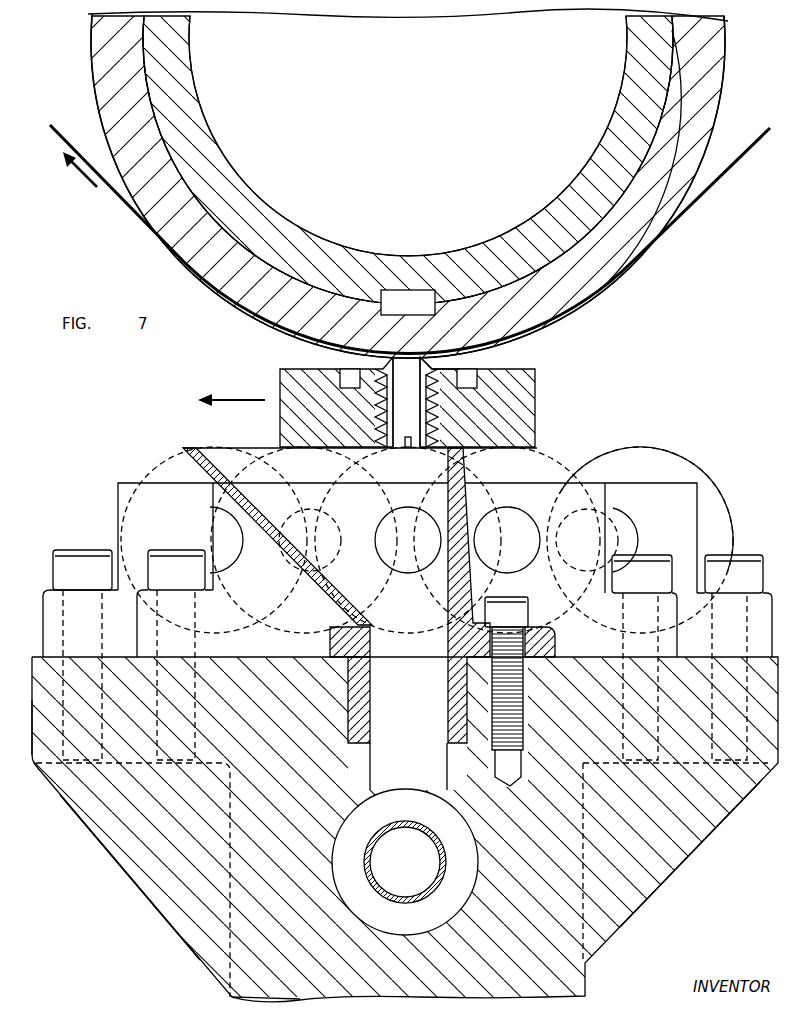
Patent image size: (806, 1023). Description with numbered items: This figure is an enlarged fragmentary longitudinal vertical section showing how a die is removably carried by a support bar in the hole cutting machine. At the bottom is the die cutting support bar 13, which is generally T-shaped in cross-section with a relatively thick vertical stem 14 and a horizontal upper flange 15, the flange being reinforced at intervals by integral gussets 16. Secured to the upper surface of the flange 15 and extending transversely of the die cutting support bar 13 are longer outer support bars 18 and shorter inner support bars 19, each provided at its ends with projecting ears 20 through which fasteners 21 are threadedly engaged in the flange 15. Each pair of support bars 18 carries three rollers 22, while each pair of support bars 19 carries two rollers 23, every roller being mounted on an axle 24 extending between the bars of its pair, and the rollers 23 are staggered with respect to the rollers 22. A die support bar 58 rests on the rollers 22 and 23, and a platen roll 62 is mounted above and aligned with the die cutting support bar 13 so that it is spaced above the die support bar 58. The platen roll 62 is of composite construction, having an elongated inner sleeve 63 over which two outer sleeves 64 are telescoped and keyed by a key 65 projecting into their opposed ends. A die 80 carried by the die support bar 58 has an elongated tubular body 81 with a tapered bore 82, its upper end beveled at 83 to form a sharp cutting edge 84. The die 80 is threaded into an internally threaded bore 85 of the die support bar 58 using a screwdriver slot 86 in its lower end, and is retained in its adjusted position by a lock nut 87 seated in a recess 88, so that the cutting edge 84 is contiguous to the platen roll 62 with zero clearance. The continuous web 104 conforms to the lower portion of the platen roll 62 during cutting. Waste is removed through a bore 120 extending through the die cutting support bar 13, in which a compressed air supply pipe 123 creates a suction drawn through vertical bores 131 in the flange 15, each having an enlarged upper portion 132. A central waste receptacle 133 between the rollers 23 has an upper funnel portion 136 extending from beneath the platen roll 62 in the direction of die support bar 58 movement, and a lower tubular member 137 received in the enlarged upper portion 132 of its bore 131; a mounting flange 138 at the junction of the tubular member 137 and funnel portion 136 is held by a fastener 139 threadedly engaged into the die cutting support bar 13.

The die cutting support bar 13 is at (541, 978).
The vertical stem 14 is at (238, 975).
The horizontal upper flange 15 is at (35, 742).
The gussets 16 is at (165, 886).
The outer support bars 18 is at (125, 482).
The inner support bars 19 is at (606, 491).
The projecting ears 20 is at (43, 606).
The fasteners 21 is at (80, 550).
The rollers 22 is at (170, 465).
The rollers 23 is at (544, 456).
The axle 24 is at (630, 526).
The die support bar 58 is at (535, 406).
The platen roll 62 is at (718, 60).
The inner sleeve 63 is at (522, 228).
The outer sleeves 64 is at (712, 128).
The key 65 is at (410, 292).
The die 80 is at (426, 407).
The tubular body 81 is at (393, 414).
The bore 82 is at (403, 397).
The bevel 83 is at (440, 366).
The cutting edge 84 is at (406, 402).
The internally threaded bore 85 is at (437, 427).
The screwdriver slot 86 is at (409, 449).
The lock nut 87 is at (370, 372).
The recess 88 is at (477, 379).
The web 104 is at (727, 172).
The bore 120 is at (478, 848).
The compressed air supply pipe 123 is at (418, 895).
The vertical bores 131 is at (447, 782).
The enlarged upper portion 132 is at (348, 731).
The central waste receptacle 133 is at (470, 486).
The funnel portion 136 is at (290, 572).
The tubular member 137 is at (355, 689).
The mounting flange 138 is at (335, 640).
The fastener 139 is at (531, 606).